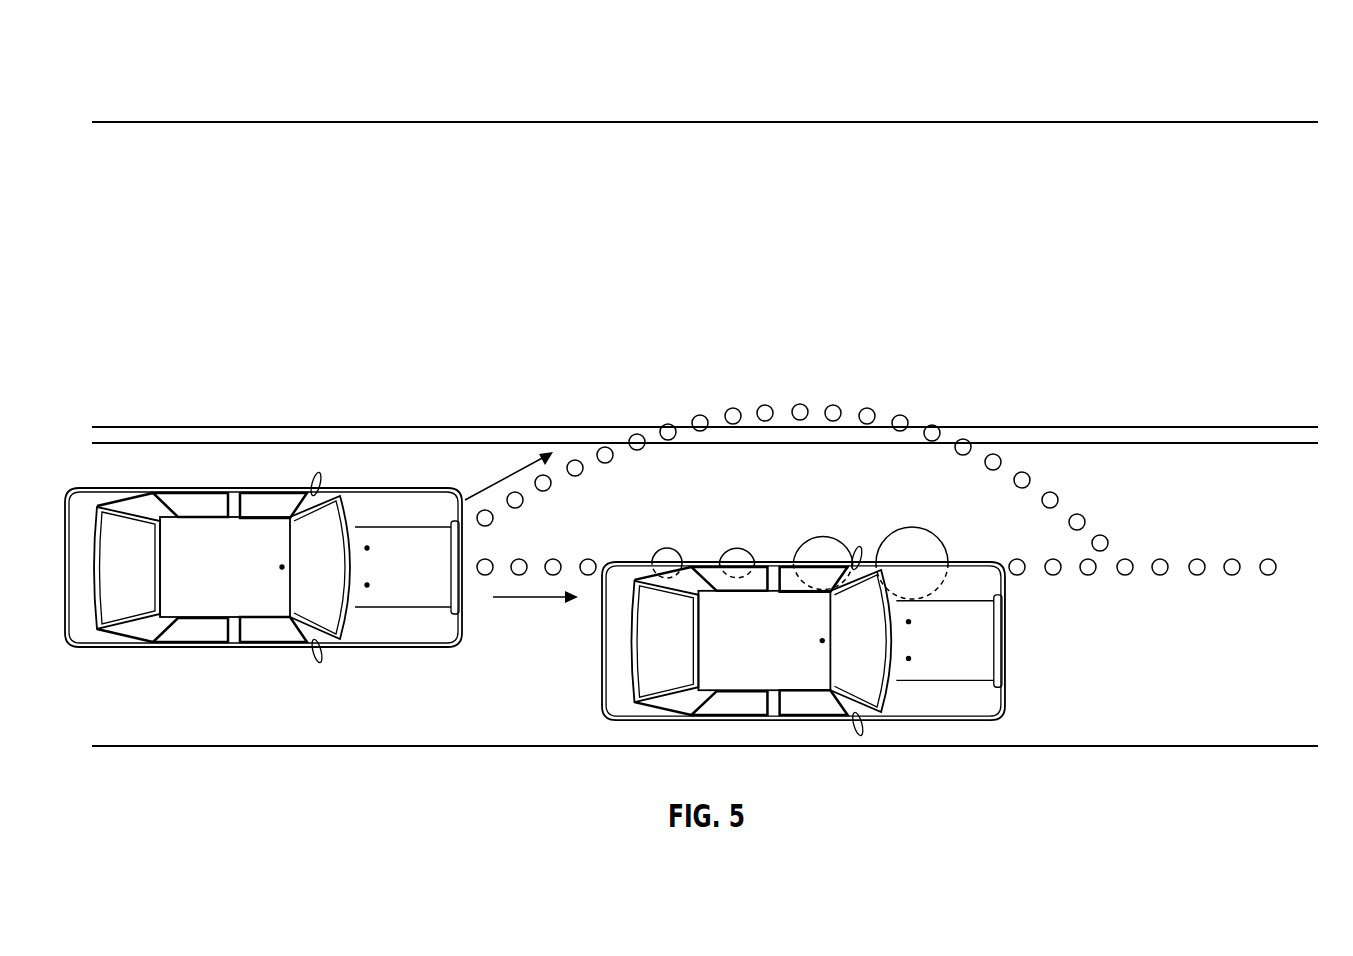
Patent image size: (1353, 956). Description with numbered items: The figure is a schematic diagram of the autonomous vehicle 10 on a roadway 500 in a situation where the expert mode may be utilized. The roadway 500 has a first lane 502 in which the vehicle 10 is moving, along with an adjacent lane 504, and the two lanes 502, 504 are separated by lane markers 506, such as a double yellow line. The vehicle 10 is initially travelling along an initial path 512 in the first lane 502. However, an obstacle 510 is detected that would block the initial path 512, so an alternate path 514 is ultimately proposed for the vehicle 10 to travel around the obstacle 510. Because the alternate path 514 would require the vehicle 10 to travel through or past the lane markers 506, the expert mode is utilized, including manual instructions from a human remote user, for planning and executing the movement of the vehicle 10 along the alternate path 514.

The roadway 500 is at (1249, 93).
The first lane 502 is at (1243, 497).
The adjacent lane 504 is at (1243, 295).
The lane markers 506 is at (1247, 441).
The autonomous vehicle 10 is at (213, 647).
The obstacle 510 is at (1005, 638).
The initial path 512 is at (553, 577).
The alternate path 514 is at (500, 483).